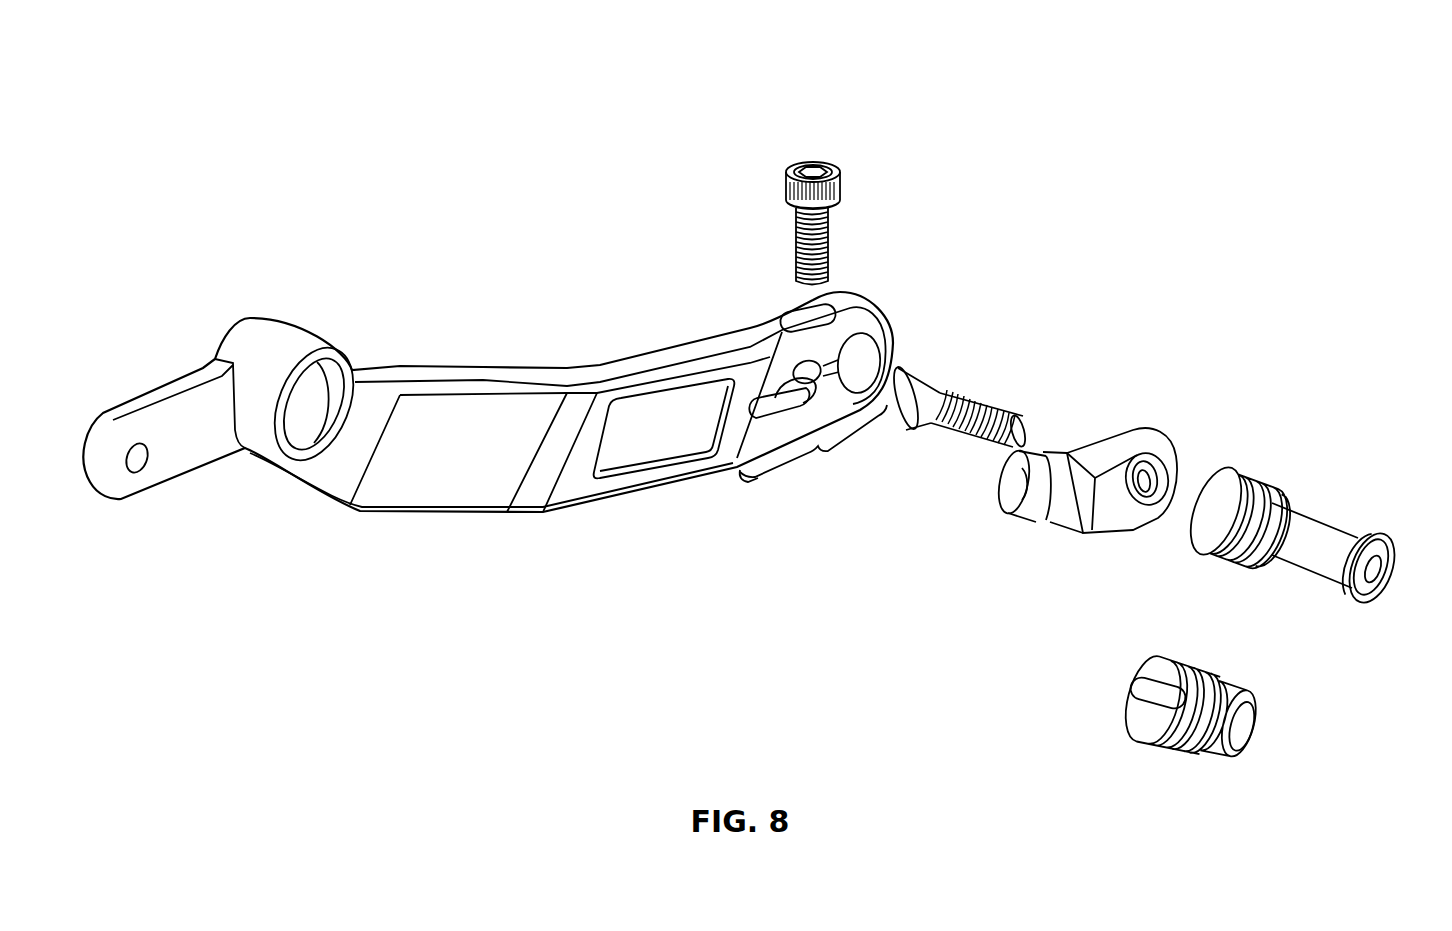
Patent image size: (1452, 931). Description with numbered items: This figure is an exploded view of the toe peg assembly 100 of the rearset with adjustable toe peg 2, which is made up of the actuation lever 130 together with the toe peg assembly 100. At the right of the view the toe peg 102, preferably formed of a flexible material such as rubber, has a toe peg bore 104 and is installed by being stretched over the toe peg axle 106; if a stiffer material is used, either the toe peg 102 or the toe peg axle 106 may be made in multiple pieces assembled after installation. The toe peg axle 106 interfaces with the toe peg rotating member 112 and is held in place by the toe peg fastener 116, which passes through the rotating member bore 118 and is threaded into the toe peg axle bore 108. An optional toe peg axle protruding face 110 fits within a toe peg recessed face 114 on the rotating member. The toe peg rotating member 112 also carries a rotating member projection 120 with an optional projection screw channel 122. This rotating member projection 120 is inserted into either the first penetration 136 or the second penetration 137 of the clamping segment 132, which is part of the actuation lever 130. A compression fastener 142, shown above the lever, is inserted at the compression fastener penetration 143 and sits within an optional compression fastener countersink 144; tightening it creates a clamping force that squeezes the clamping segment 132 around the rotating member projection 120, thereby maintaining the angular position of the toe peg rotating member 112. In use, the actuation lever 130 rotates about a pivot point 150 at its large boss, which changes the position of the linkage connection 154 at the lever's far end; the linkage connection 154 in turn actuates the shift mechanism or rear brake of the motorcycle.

The rearset with adjustable toe peg 2 is at (697, 78).
The toe peg assembly 100 is at (1450, 396).
The toe peg 102 is at (1184, 718).
The toe peg bore 104 is at (1243, 731).
The toe peg axle 106 is at (1316, 502).
The toe peg axle bore 108 is at (1372, 576).
The toe peg axle protruding face 110 is at (1200, 470).
The toe peg rotating member 112 is at (1104, 418).
The toe peg recessed face 114 is at (1155, 452).
The toe peg fastener 116 is at (976, 393).
The rotating member bore 118 is at (1140, 486).
The rotating member projection 120 is at (1004, 478).
The projection screw channel 122 is at (1021, 484).
The actuation lever 130 is at (408, 333).
The clamping segment 132 is at (813, 445).
The first penetration 136 is at (792, 412).
The second penetration 137 is at (868, 366).
The compression fastener 142 is at (830, 233).
The compression fastener penetration 143 is at (802, 373).
The compression fastener countersink 144 is at (797, 315).
The pivot point 150 is at (310, 420).
The linkage connection 154 is at (132, 465).